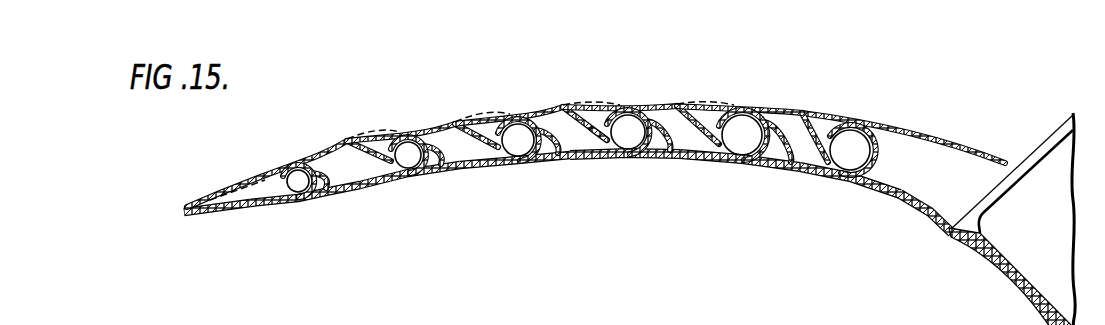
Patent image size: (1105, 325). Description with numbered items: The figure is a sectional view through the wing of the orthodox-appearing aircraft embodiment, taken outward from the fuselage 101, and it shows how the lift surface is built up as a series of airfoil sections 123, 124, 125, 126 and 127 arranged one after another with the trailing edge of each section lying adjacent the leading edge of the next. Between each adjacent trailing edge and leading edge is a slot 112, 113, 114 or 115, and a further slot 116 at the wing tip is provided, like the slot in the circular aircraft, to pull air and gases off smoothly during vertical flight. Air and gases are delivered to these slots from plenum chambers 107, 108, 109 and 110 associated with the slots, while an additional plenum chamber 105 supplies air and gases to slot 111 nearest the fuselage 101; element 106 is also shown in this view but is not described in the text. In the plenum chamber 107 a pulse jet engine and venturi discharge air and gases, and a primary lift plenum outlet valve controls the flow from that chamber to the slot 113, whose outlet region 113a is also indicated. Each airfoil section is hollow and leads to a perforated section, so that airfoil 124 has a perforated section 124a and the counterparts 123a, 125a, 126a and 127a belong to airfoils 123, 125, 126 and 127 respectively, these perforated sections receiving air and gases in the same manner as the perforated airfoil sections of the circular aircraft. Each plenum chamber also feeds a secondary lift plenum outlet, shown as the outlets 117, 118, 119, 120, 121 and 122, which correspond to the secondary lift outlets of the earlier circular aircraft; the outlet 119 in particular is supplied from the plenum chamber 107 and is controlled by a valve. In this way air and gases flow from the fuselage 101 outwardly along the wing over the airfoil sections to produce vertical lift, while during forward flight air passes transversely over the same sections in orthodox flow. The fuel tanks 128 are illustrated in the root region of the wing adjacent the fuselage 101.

The fuselage 101 is at (1048, 232).
The plenum chamber 105 is at (838, 163).
The support 106 is at (740, 160).
The plenum chamber 107 is at (603, 147).
The plenum chamber 108 is at (500, 165).
The plenum chamber 109 is at (378, 173).
The plenum chamber 110 is at (290, 188).
The slot 111 is at (800, 110).
The slot 112 is at (668, 103).
The slot 113 is at (560, 112).
The strut end 113a is at (598, 140).
The slot 114 is at (448, 130).
The slot 115 is at (348, 153).
The slot 116 is at (178, 212).
The secondary lift plenum outlet 117 is at (842, 177).
The secondary lift plenum outlet 118 is at (737, 150).
The secondary lift plenum outlet 119 is at (627, 157).
The secondary lift plenum outlet 120 is at (518, 167).
The secondary lift plenum outlet 121 is at (410, 163).
The secondary lift plenum outlet 122 is at (298, 193).
The airfoil section 123 is at (797, 108).
The perforated section 123a is at (715, 97).
The airfoil section 124 is at (655, 118).
The perforated section 124a is at (595, 102).
The airfoil section 125 is at (532, 123).
The perforated section 125a is at (473, 117).
The airfoil section 126 is at (412, 130).
The perforated section 126a is at (357, 138).
The airfoil section 127 is at (318, 162).
The perforated section 127a is at (243, 182).
The fuel tanks 128 is at (942, 176).